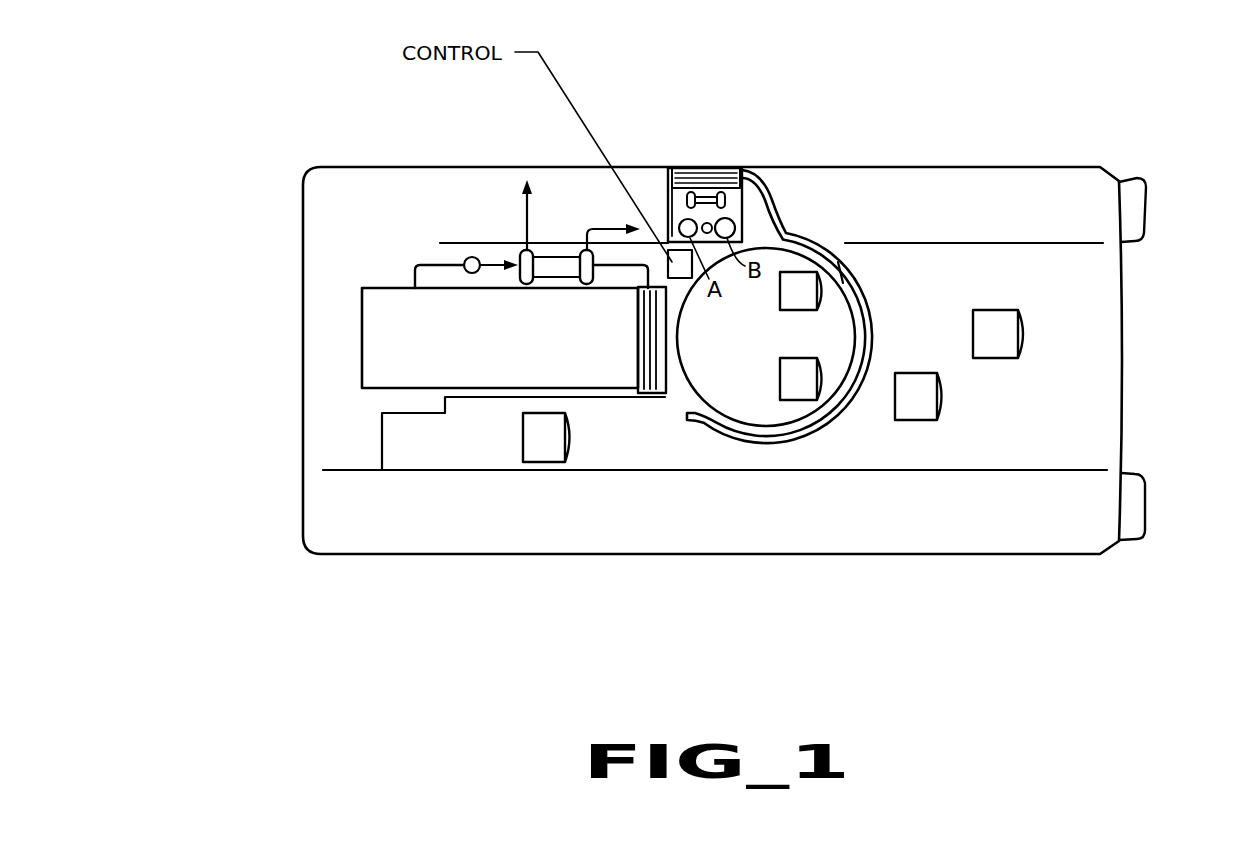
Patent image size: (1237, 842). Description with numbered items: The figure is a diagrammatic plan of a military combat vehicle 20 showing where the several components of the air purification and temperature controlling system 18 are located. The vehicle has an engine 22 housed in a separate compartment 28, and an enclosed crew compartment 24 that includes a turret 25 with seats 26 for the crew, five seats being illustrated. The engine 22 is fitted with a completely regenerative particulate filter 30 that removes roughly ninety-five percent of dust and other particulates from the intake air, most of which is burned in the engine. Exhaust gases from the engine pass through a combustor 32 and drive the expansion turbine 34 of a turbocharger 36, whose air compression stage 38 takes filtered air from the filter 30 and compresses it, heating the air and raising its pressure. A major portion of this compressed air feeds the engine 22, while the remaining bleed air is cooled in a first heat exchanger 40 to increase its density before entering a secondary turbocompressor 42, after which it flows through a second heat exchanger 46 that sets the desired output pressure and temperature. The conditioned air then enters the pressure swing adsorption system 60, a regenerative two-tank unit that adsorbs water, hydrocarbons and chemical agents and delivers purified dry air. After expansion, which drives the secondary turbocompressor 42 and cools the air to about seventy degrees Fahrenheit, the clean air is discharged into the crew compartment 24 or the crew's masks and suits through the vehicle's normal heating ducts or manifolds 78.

The air purification and temperature controlling system 18 is at (808, 224).
The combat vehicle 20 is at (258, 379).
The engine 22 is at (613, 350).
The crew compartment 24 is at (1084, 324).
The turret 25 is at (847, 333).
The seats 26 is at (797, 363).
The separate compartment 28 is at (313, 322).
The particulate filter 30 is at (650, 375).
The combustor 32 is at (464, 265).
The expansion turbine 34 is at (317, 140).
The turbocharger 36 is at (522, 250).
The air compression stage 38 is at (579, 250).
The first heat exchanger 40 is at (674, 180).
The secondary turbocompressor 42 is at (722, 198).
The second heat exchanger 46 is at (708, 168).
The pressure swing adsorption system 60 is at (668, 195).
The heating ducts or manifolds 78 is at (840, 270).